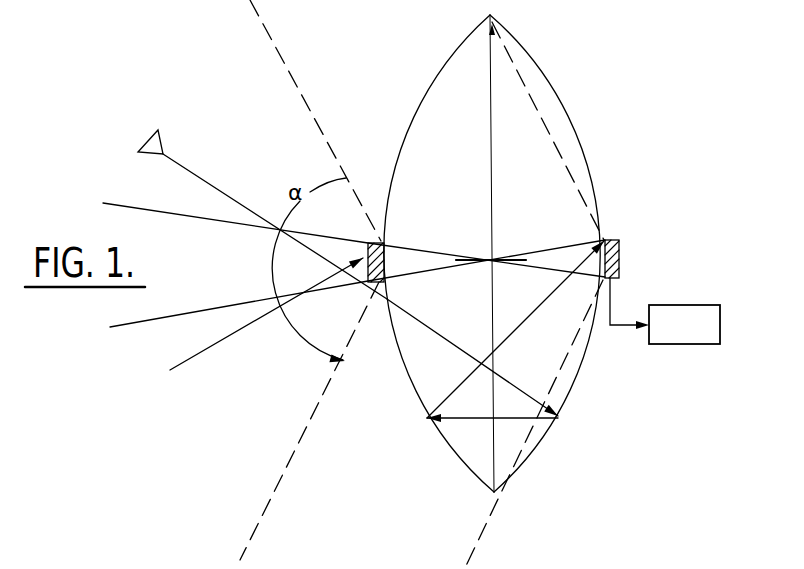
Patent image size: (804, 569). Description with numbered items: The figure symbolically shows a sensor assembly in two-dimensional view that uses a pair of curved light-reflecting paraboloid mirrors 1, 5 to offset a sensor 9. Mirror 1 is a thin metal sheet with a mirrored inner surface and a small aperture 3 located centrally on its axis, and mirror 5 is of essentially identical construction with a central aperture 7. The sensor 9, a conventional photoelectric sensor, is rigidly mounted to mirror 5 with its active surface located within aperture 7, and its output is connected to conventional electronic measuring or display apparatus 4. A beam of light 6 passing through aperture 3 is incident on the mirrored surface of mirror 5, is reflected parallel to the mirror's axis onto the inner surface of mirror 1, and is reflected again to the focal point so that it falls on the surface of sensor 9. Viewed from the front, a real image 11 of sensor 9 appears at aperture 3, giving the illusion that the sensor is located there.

The mirror 1 is at (406, 372).
The aperture 3 is at (386, 281).
The evaluation unit 4 is at (721, 313).
The mirror 5 is at (577, 385).
The light beam 6 is at (234, 200).
The central aperture 7 is at (603, 281).
The sensor 9 is at (620, 267).
The image 11 is at (229, 338).